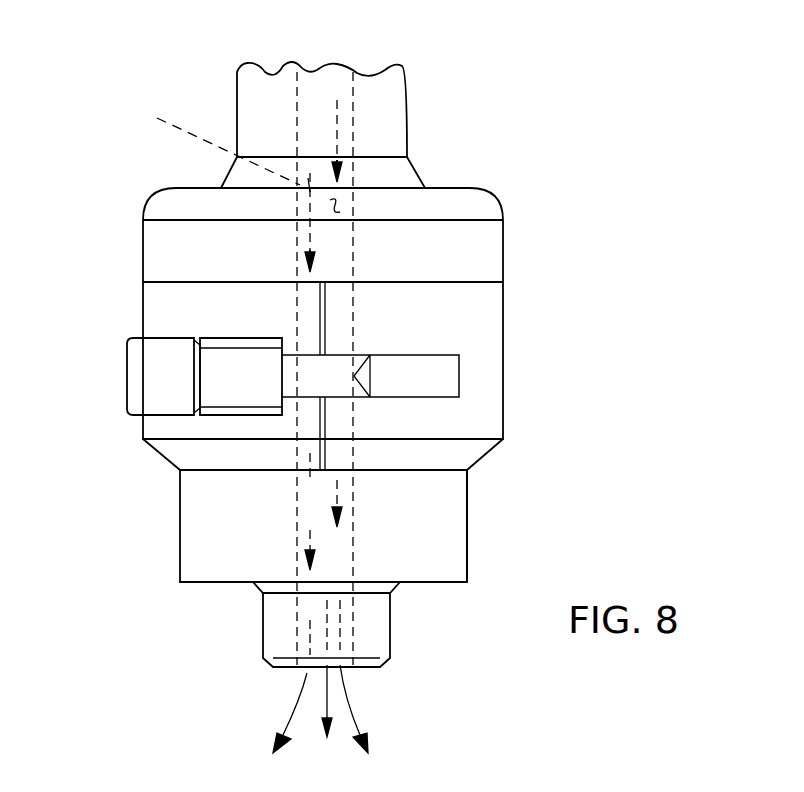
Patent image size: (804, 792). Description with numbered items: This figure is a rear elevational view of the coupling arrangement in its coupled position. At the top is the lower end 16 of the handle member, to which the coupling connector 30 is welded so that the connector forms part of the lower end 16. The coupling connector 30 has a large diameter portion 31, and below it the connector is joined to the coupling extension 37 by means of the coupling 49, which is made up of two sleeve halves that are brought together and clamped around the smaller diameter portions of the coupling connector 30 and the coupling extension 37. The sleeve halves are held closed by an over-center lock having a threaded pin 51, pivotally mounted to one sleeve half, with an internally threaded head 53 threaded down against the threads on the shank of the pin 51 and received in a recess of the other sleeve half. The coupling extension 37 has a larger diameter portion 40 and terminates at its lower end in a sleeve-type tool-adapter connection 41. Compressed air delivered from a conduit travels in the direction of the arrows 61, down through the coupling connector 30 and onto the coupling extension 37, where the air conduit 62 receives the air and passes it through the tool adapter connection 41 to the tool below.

The lower end 16 is at (392, 95).
The coupling connector 30 is at (504, 239).
The large diameter portion 31 is at (457, 240).
The coupling extension 37 is at (453, 559).
The larger diameter portion 40 is at (437, 507).
The tool-adapter connection 41 is at (373, 622).
The coupling 49 is at (488, 316).
The threaded pin 51 is at (437, 383).
The threaded head 53 is at (163, 388).
The arrows 61 is at (340, 132).
The air conduit 62 is at (229, 159).